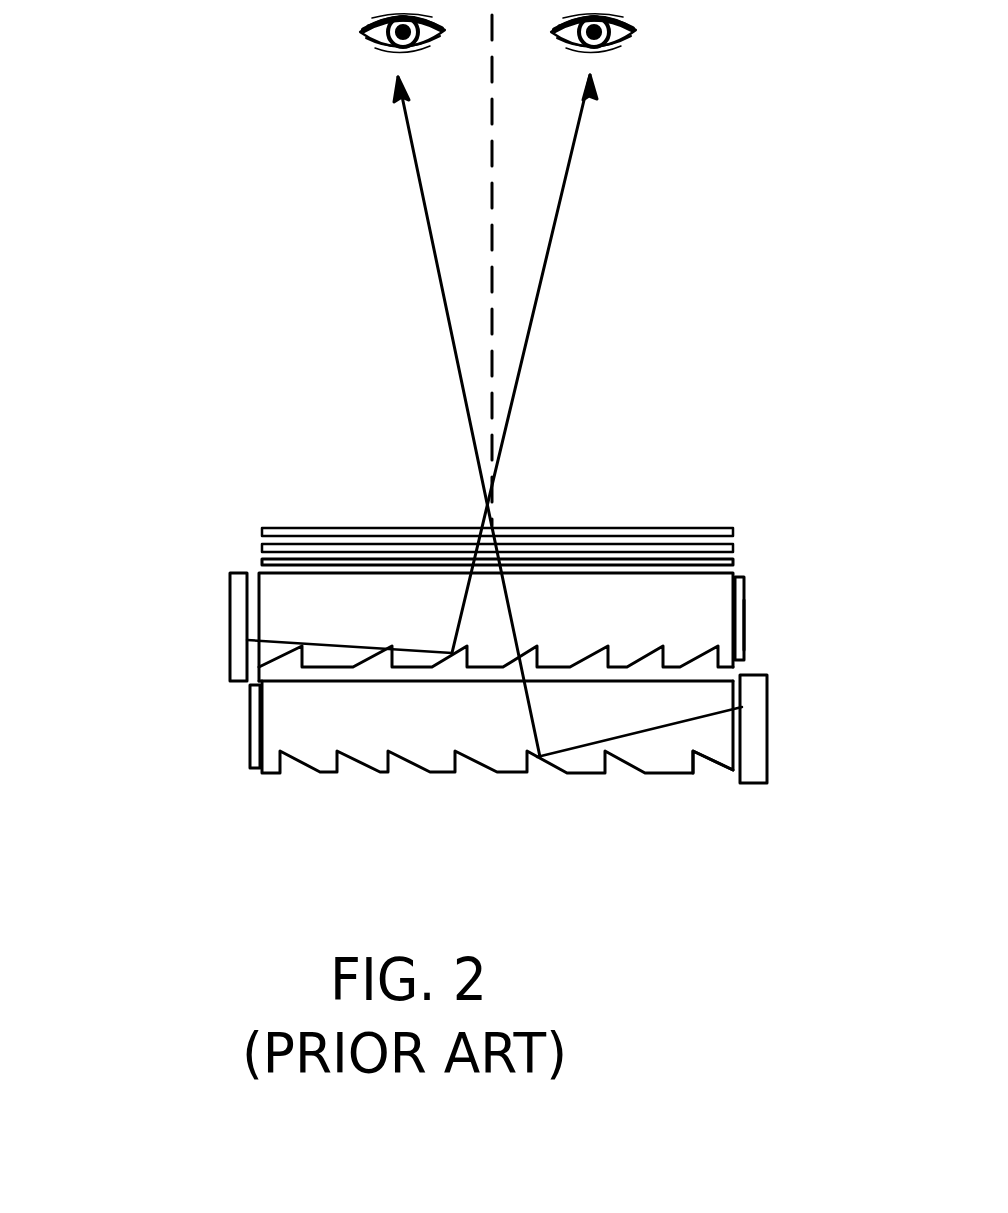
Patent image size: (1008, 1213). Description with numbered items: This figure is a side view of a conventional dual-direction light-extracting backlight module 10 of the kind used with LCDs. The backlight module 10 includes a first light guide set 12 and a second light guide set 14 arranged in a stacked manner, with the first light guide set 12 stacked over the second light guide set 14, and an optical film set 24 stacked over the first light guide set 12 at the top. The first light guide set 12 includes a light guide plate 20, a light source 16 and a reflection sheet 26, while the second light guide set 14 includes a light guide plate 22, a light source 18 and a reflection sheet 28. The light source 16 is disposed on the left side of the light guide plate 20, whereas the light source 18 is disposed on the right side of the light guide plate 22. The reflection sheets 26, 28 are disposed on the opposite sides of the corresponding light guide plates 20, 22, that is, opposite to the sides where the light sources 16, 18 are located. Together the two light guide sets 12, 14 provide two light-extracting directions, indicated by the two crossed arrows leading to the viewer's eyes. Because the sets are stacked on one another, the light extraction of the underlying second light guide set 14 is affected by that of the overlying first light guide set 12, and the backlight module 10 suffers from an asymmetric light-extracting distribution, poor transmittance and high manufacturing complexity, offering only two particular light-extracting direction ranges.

The dual-direction light-extracting backlight module 10 is at (163, 425).
The first light guide set 12 is at (180, 596).
The second light guide set 14 is at (160, 734).
The light source 16 is at (230, 640).
The light source 18 is at (767, 755).
The light guide plate 20 is at (718, 595).
The light guide plate 22 is at (717, 752).
The optical film set 24 is at (741, 527).
The reflection sheet 26 is at (740, 622).
The reflection sheet 28 is at (250, 755).